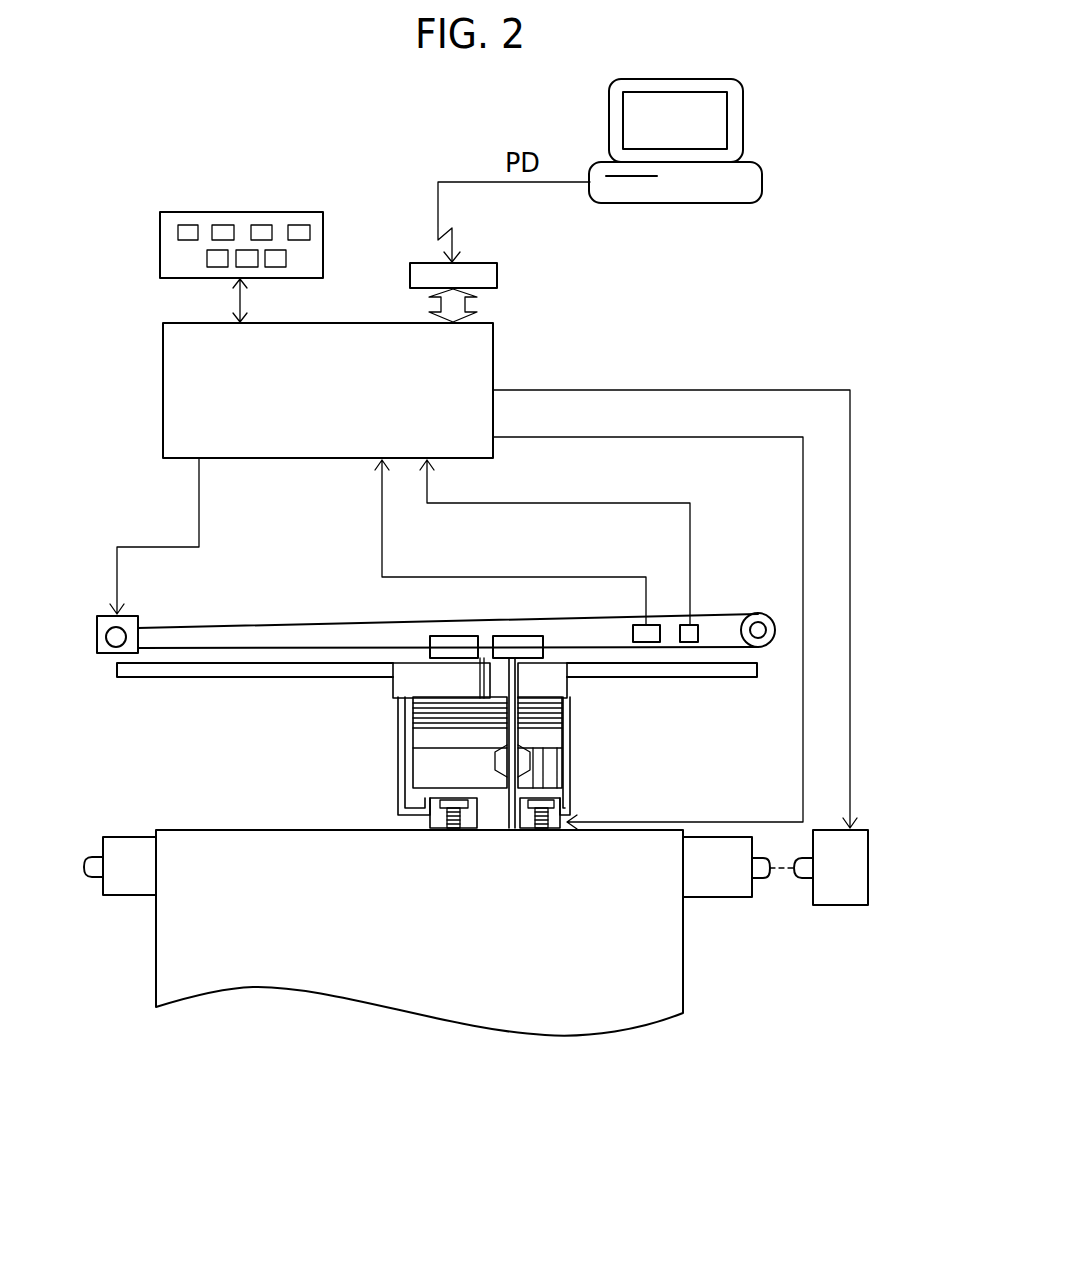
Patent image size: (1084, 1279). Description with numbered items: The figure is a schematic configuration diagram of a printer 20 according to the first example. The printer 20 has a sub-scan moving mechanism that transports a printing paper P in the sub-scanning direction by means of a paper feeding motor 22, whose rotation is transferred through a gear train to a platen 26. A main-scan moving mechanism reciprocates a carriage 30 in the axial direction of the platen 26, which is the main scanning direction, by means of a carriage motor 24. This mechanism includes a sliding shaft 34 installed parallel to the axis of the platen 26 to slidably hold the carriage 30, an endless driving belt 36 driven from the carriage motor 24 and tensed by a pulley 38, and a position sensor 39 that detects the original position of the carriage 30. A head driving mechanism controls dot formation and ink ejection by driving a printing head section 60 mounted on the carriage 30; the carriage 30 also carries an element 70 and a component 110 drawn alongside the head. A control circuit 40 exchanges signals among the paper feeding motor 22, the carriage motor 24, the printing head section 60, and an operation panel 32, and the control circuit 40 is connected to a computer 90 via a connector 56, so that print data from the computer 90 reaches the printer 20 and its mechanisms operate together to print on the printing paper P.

The printer 20 is at (619, 1121).
The paper feeding motor 22 is at (835, 905).
The carriage motor 24 is at (104, 654).
The platen 26 is at (725, 897).
The carriage 30 is at (509, 732).
The operation panel 32 is at (302, 212).
The sliding shaft 34 is at (290, 677).
The endless driving belt 36 is at (316, 627).
The pulley 38 is at (750, 616).
The position sensor 39 is at (678, 627).
The control circuit 40 is at (493, 348).
The connector 56 is at (497, 275).
The printing head section 60 is at (573, 807).
The ink cartridge 70 is at (427, 765).
The computer 90 is at (743, 120).
The sensor 110 is at (628, 627).
The printing paper P is at (683, 985).